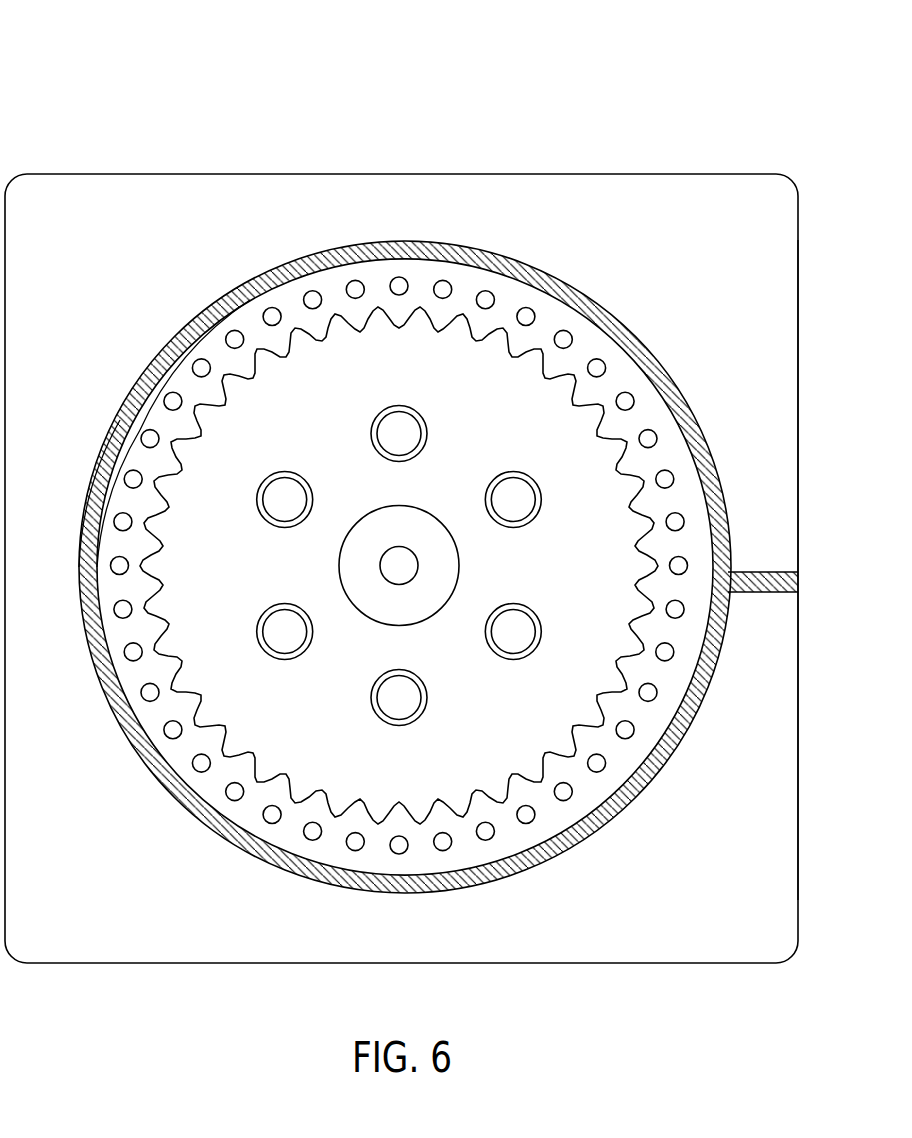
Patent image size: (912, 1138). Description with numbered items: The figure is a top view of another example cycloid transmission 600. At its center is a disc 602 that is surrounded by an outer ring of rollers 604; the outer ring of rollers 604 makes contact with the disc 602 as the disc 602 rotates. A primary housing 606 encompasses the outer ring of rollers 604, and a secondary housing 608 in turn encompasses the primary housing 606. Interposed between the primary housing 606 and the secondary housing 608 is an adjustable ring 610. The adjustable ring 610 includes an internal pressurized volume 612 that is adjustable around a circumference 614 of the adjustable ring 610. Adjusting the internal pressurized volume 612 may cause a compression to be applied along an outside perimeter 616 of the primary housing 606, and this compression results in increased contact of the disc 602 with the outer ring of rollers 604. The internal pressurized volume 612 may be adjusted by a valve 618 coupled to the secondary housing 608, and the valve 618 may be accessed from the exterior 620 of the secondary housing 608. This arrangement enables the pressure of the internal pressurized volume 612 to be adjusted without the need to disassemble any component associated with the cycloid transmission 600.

The cycloid transmission 600 is at (147, 87).
The disc 602 is at (490, 765).
The outer ring of rollers 604 is at (400, 284).
The primary housing 606 is at (627, 373).
The secondary housing 608 is at (597, 245).
The adjustable ring 610 is at (117, 505).
The internal pressurized volume 612 is at (82, 585).
The circumference 614 is at (100, 507).
The outside perimeter 616 is at (137, 420).
The valve 618 is at (775, 592).
The exterior 620 is at (797, 470).